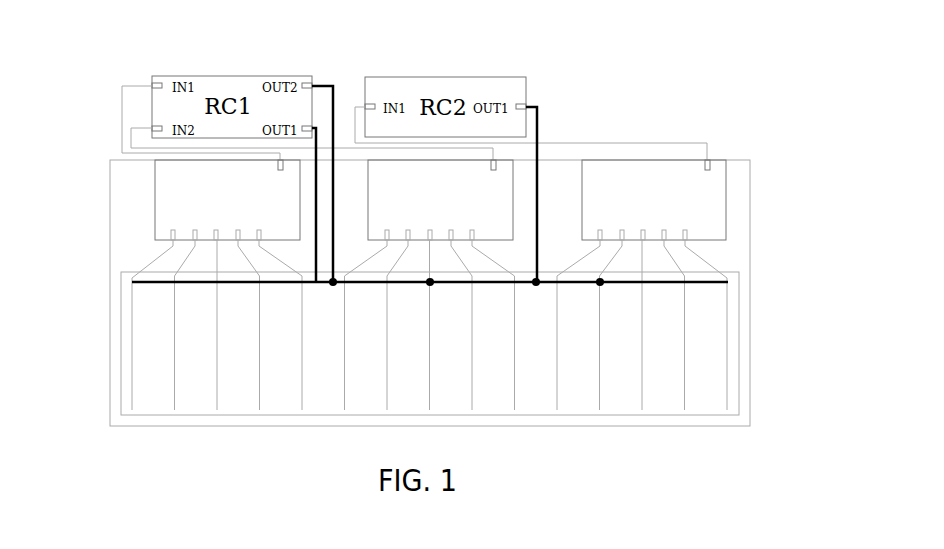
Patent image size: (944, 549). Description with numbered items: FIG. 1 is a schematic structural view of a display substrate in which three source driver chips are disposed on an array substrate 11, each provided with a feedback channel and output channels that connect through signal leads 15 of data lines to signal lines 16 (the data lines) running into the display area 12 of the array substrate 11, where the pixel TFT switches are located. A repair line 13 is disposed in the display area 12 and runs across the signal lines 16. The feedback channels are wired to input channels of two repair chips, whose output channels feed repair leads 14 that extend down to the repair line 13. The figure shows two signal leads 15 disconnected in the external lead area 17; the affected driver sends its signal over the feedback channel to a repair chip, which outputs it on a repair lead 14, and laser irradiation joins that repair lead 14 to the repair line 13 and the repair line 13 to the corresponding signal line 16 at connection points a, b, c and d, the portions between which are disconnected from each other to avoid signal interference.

The array substrate 11 is at (750, 233).
The display area 12 is at (740, 368).
The repair line 13 is at (707, 283).
The repair lead 14 is at (336, 203).
The signal lead of data line 15 is at (708, 261).
The signal line 16 is at (683, 383).
The external lead area 17 is at (145, 247).